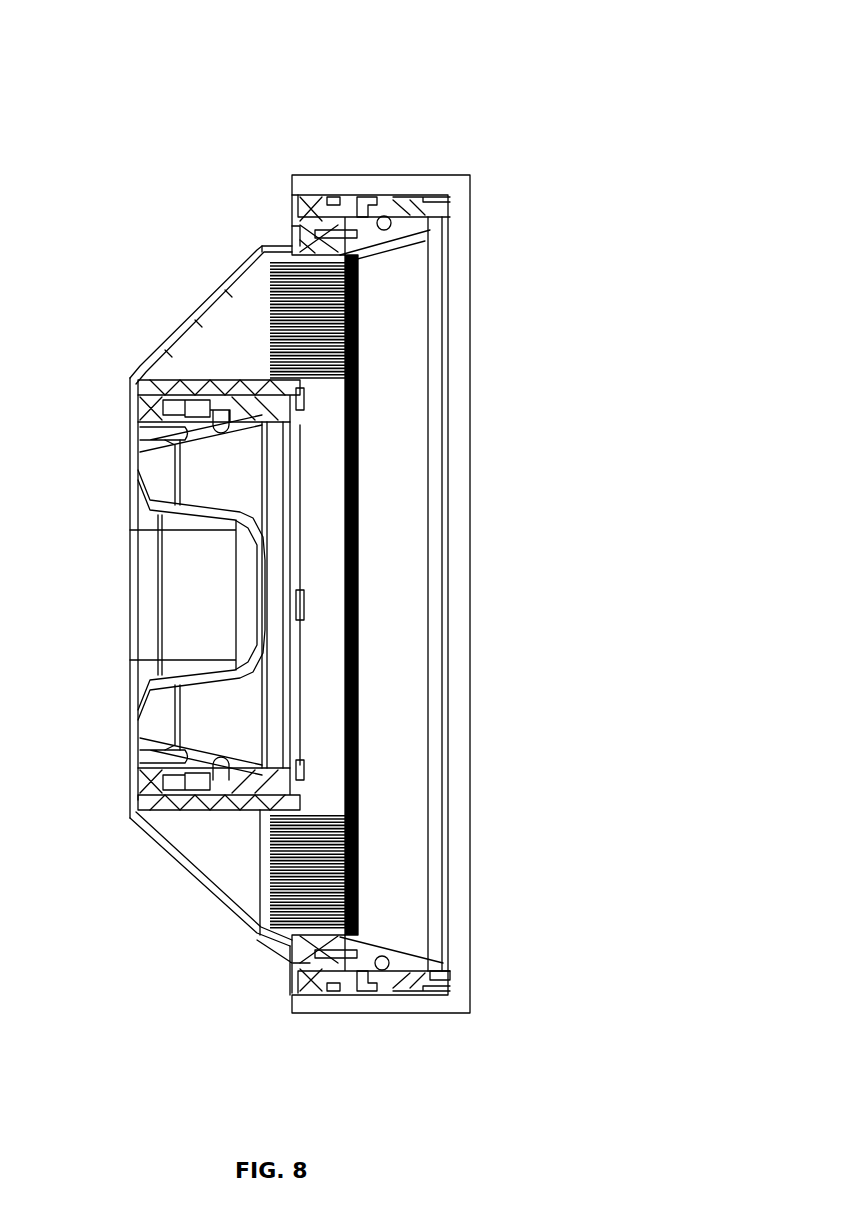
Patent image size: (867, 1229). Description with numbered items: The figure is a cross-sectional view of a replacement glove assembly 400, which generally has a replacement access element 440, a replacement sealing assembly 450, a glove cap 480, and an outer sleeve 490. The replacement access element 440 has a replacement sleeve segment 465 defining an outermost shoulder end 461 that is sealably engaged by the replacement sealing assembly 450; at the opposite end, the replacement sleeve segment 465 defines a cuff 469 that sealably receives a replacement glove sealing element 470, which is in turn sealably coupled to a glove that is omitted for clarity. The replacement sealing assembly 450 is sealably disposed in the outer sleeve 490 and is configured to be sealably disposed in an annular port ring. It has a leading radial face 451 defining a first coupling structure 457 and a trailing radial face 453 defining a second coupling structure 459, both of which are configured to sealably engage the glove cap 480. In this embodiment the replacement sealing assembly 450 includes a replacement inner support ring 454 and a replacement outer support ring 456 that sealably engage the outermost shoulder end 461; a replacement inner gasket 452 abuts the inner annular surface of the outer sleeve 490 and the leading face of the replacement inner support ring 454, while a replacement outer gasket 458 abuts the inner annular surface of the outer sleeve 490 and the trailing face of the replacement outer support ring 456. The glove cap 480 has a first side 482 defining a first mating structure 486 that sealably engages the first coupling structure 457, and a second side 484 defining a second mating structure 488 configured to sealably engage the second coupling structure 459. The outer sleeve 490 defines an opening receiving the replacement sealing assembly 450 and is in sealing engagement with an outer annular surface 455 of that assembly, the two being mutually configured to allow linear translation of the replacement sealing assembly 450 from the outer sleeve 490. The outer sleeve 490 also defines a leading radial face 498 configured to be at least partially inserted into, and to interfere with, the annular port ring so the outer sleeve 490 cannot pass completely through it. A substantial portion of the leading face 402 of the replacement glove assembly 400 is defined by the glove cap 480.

The replacement glove assembly 400 is at (415, 52).
The leading face 402 is at (128, 418).
The replacement access element 440 is at (365, 842).
The replacement sealing assembly 450 is at (400, 265).
The leading radial face 451 is at (236, 200).
The replacement inner gasket 452 is at (292, 212).
The trailing radial face 453 is at (478, 196).
The replacement inner support ring 454 is at (335, 200).
The outer annular surface 455 is at (375, 205).
The replacement outer support ring 456 is at (400, 247).
The first coupling structure 457 is at (320, 965).
The replacement outer gasket 458 is at (440, 200).
The second coupling structure 459 is at (452, 980).
The outermost shoulder end 461 is at (375, 963).
The replacement sleeve segment 465 is at (358, 905).
The cuff 469 is at (185, 378).
The replacement glove sealing element 470 is at (198, 462).
The glove cap 480 is at (185, 880).
The first side 482 is at (218, 873).
The second side 484 is at (142, 838).
The first mating structure 486 is at (290, 963).
The second mating structure 488 is at (280, 963).
The outer sleeve 490 is at (395, 185).
The leading radial face 498 is at (292, 210).